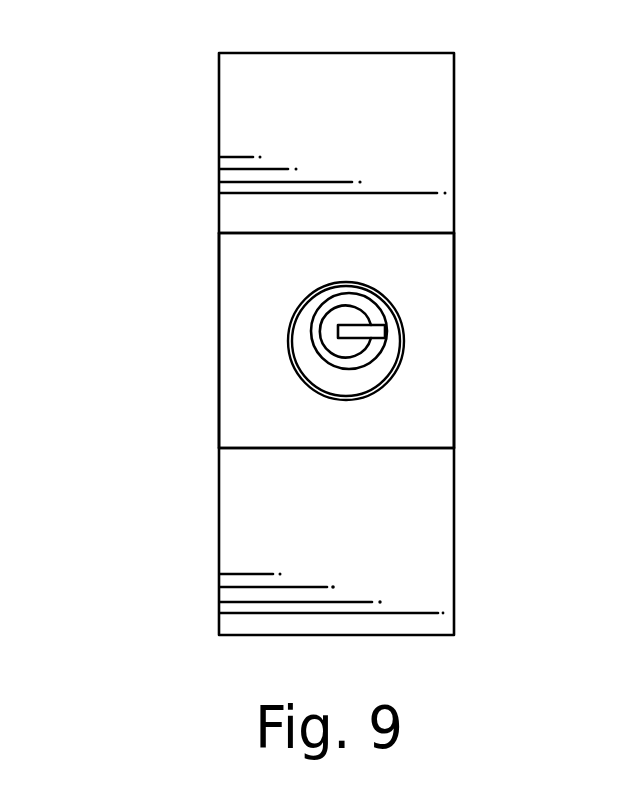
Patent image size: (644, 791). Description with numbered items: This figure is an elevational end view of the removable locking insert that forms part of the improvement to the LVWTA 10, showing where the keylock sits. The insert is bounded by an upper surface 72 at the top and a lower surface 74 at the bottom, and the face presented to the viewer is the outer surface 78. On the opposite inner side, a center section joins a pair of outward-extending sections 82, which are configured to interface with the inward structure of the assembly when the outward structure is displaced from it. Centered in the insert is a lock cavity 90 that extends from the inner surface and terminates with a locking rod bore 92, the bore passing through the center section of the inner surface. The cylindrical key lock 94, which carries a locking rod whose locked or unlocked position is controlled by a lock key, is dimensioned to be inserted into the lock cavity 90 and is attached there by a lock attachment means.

The LVWTA 10 is at (574, 126).
The upper surface 72 is at (455, 502).
The lower surface 74 is at (220, 157).
The outer surface 78 is at (245, 357).
The outward-extending sections 82 is at (432, 188).
The lock cavity 90 is at (393, 325).
The locking rod bore 92 is at (381, 287).
The cylindrical key lock 94 is at (358, 333).